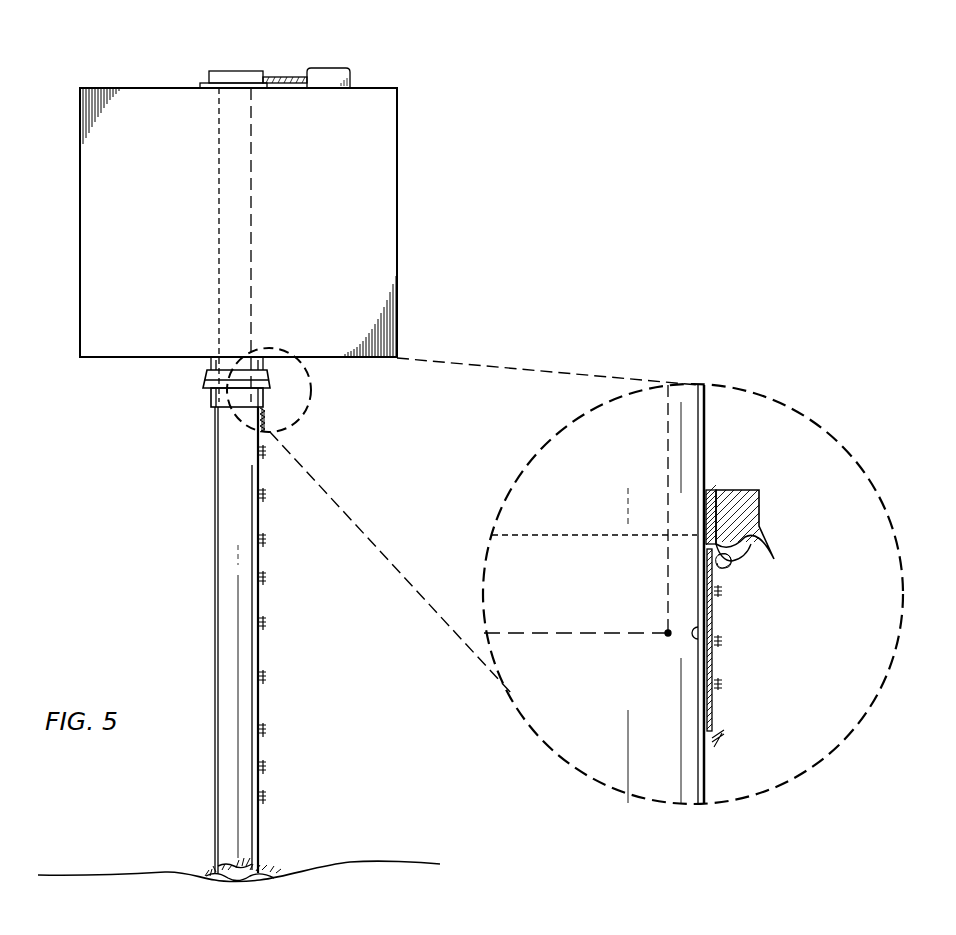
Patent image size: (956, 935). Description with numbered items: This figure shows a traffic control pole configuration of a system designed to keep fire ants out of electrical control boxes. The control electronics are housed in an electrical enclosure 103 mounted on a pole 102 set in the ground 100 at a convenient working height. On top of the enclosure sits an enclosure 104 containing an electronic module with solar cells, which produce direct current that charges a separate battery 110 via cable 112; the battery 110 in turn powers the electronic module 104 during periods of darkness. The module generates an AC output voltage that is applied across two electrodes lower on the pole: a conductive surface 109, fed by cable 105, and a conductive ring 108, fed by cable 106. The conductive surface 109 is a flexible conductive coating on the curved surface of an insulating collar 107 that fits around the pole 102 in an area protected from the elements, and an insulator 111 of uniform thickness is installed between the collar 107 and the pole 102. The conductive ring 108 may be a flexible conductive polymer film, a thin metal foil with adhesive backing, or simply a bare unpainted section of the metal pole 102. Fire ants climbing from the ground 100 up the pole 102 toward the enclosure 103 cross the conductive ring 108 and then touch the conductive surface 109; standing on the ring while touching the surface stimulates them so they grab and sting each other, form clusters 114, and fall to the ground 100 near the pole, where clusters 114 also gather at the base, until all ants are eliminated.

The ground 100 is at (82, 874).
The pole 102 is at (216, 588).
The electrical enclosure 103 is at (80, 163).
The enclosure containing electronic module 104 is at (229, 71).
The cable 105 is at (219, 199).
The cable 106 is at (252, 186).
The insulating collar 107 is at (203, 378).
The conductive ring 108 is at (211, 398).
The conductive surface 109 is at (774, 558).
The battery 110 is at (342, 68).
The insulator 111 is at (712, 490).
The cable 112 is at (284, 77).
The clusters 114 is at (270, 868).